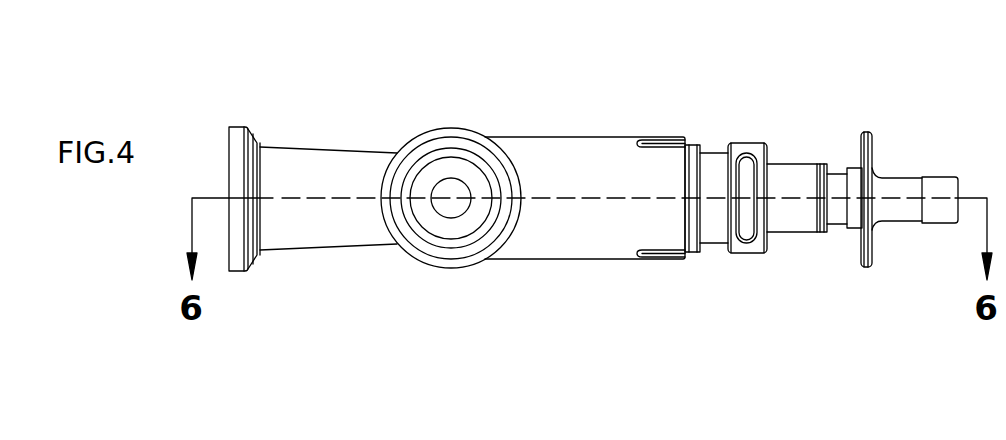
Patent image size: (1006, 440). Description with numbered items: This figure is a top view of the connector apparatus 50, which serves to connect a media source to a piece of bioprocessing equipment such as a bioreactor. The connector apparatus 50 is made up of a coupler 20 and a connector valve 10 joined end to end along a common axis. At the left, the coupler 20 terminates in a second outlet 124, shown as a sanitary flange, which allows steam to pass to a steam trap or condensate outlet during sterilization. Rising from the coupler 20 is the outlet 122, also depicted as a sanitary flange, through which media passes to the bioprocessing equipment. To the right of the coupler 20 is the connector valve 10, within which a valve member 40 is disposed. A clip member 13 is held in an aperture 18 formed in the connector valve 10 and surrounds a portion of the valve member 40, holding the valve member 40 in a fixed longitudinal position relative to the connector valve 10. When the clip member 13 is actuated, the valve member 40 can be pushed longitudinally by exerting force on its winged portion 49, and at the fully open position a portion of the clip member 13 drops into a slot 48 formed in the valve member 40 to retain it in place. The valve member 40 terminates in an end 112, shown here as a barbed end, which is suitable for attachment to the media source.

The connector apparatus 50 is at (827, 50).
The second outlet 124 is at (235, 150).
The outlet 122 is at (443, 133).
The coupler 20 is at (527, 250).
The connector valve 10 is at (715, 238).
The clip member 13 is at (748, 240).
The aperture 18 is at (746, 153).
The valve member 40 is at (803, 228).
The slot 48 is at (840, 173).
The winged portion 49 is at (865, 266).
The end 112 is at (943, 182).